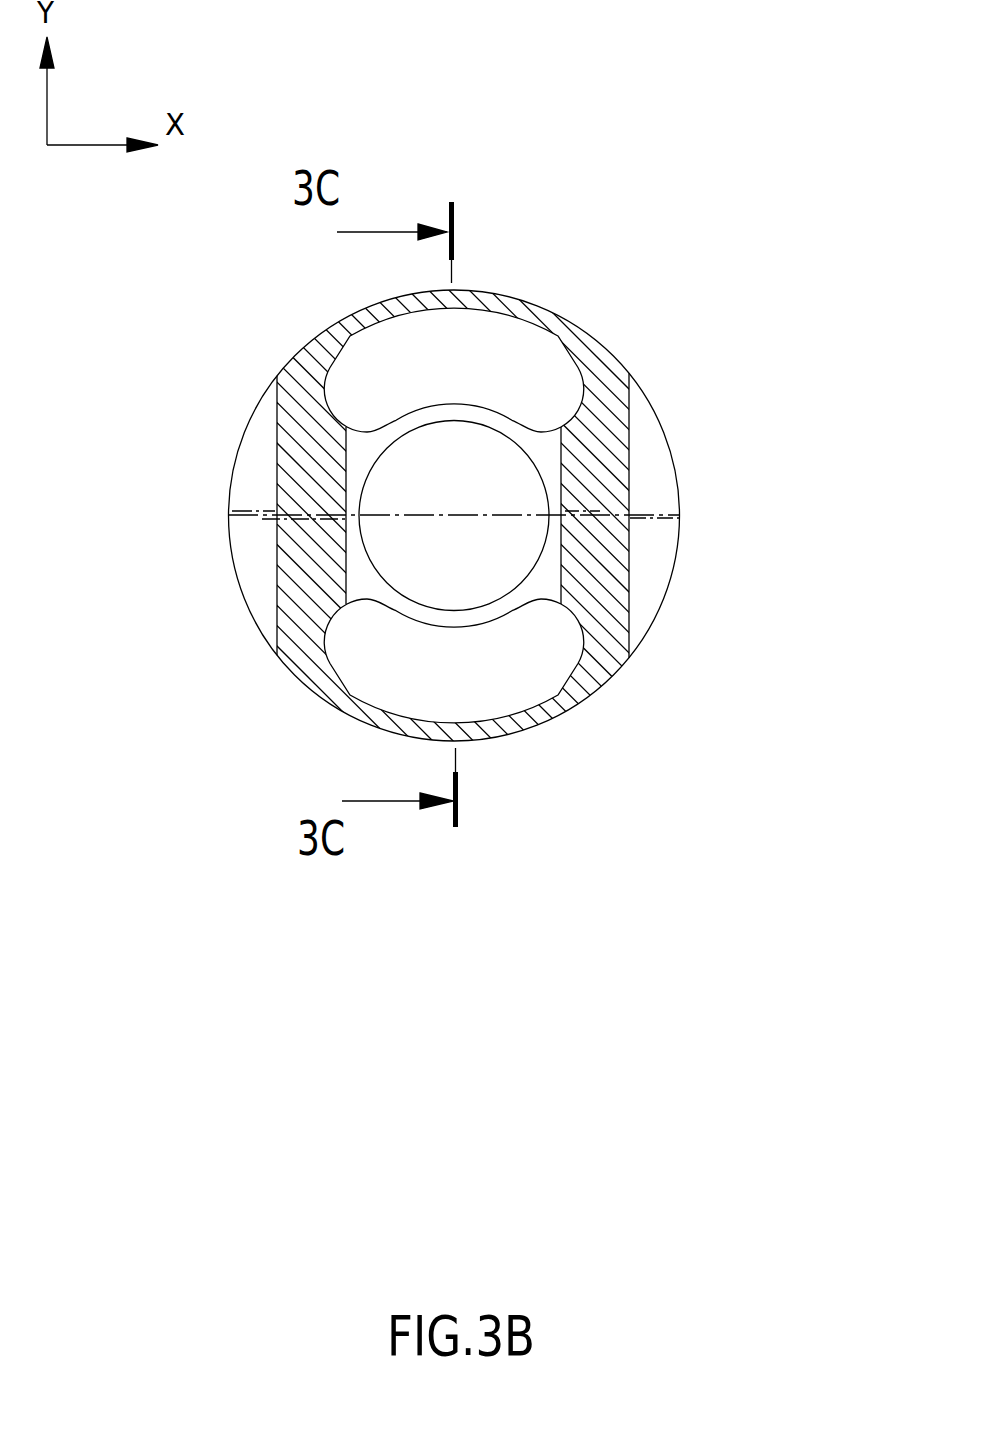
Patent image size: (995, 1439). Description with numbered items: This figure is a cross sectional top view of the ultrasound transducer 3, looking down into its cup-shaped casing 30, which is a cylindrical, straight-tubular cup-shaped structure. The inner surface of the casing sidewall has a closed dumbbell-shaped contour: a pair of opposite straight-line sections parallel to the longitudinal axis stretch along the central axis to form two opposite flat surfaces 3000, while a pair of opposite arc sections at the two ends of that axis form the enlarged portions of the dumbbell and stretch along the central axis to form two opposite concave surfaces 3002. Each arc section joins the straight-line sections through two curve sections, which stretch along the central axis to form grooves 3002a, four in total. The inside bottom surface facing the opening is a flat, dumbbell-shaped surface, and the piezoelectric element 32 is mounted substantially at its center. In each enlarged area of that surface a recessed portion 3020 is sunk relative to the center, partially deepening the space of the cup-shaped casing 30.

The ultrasound transducer 3 is at (537, 232).
The cup-shaped casing 30 is at (680, 552).
The piezoelectric element 32 is at (530, 488).
The flat surfaces 3000 is at (360, 461).
The concave surfaces 3002 is at (425, 708).
The grooves 3002a is at (338, 648).
The recessed portions 3020 is at (415, 375).